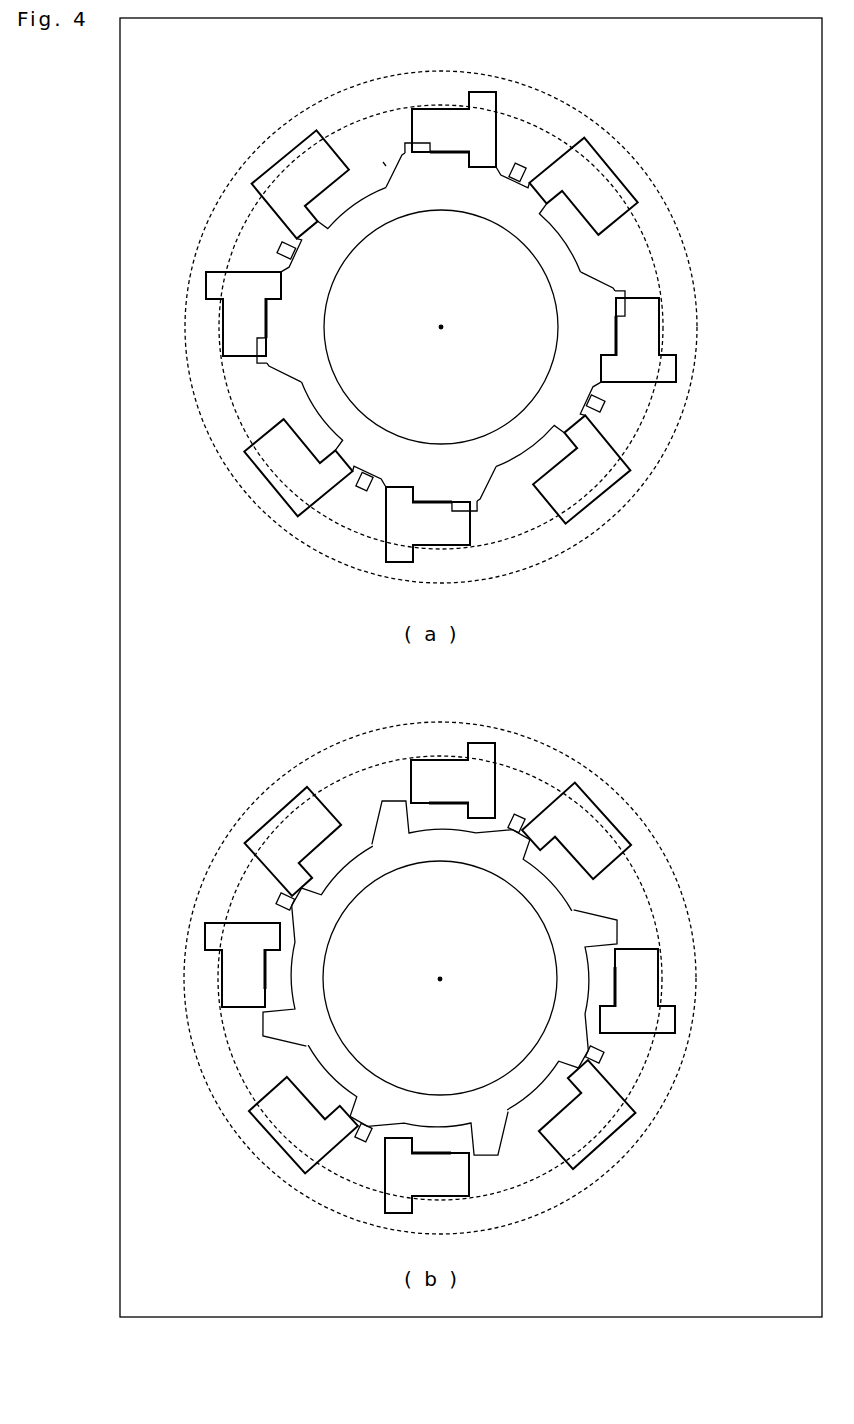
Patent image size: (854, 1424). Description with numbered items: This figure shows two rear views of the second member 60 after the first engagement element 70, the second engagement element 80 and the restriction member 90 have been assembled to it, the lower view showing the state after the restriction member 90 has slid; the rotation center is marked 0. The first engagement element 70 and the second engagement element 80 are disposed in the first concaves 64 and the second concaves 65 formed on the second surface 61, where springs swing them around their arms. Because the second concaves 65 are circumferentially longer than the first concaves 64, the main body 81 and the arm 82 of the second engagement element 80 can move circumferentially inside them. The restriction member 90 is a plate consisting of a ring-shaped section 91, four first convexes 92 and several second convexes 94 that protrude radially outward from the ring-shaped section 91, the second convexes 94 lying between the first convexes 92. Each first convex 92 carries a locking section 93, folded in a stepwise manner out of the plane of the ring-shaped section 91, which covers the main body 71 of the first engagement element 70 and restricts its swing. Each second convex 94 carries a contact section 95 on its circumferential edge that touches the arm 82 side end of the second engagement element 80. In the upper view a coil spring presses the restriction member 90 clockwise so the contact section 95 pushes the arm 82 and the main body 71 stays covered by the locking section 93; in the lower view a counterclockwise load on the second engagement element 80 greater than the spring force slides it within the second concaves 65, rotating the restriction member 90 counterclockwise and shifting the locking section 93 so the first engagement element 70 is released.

The rotation center 0 is at (444, 324).
The second member 60 is at (722, 272).
The second surface 61 is at (627, 407).
The first concaves 64 is at (513, 178).
The second concaves 65 is at (552, 165).
The first engagement element 70 is at (445, 158).
The main body 71 is at (446, 117).
The second engagement element 80 is at (577, 243).
The main body 81 is at (612, 200).
The arm 82 is at (522, 196).
The restriction member 90 is at (448, 225).
The ring-shaped section 91 is at (383, 457).
The first convexes 92 is at (385, 162).
The locking section 93 is at (428, 145).
The second convexes 94 is at (518, 172).
The contact section 95 is at (575, 145).